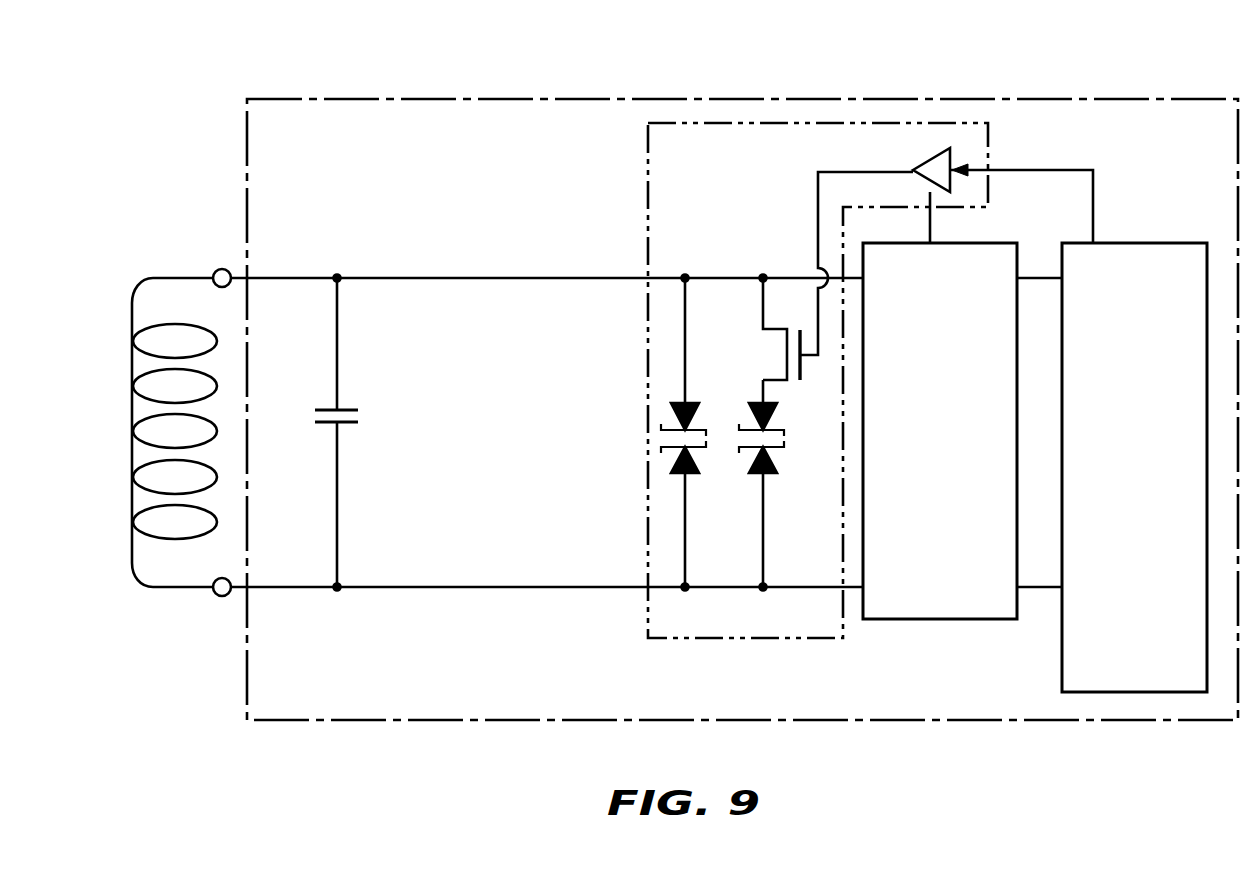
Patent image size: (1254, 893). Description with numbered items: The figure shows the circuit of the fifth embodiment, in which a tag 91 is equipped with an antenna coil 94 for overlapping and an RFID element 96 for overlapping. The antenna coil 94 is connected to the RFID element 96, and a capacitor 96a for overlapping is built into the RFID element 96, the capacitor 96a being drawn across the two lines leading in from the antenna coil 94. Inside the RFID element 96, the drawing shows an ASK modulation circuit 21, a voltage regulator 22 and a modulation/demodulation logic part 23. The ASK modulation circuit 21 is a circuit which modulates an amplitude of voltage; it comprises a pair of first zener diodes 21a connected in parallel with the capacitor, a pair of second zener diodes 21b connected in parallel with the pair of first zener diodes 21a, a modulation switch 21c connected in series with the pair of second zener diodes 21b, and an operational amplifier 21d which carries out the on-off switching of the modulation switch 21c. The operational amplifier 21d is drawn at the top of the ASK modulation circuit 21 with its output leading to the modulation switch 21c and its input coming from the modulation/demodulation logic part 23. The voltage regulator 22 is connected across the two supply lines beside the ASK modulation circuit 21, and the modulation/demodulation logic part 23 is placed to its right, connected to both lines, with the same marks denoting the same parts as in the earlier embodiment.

The tag 91 is at (273, 82).
The RFID element for overlapping 96 is at (462, 97).
The capacitor for overlapping 96a is at (343, 408).
The antenna coil for overlapping 94 is at (136, 310).
The ASK modulation circuit 21 is at (647, 173).
The first zener diode 21a is at (698, 417).
The second zener diode 21b is at (776, 417).
The modulation switch 21c is at (787, 355).
The operational amplifier 21d is at (916, 158).
The voltage regulator 22 is at (935, 620).
The modulation/demodulation logic part 23 is at (1133, 693).